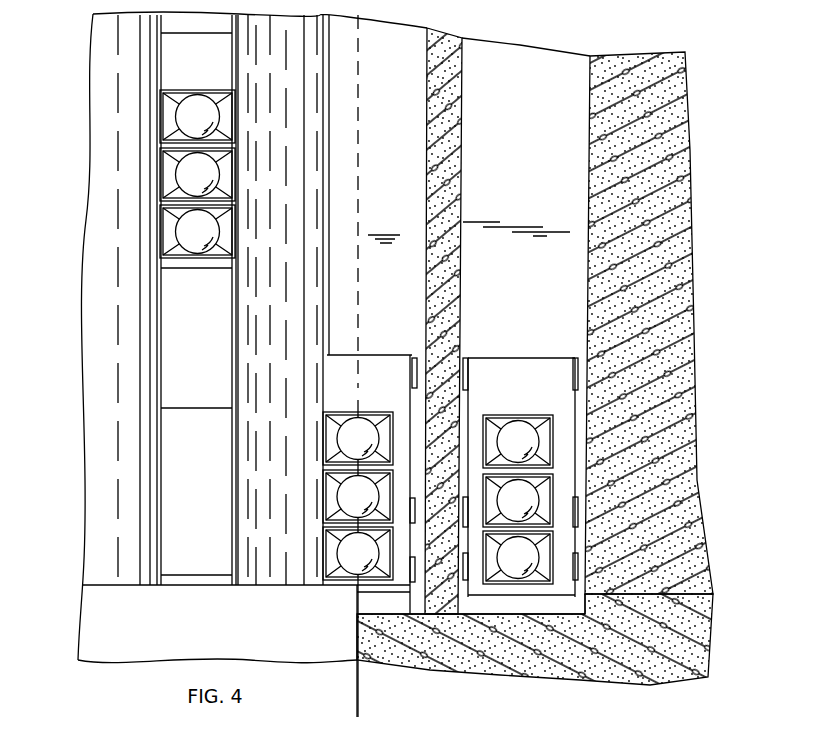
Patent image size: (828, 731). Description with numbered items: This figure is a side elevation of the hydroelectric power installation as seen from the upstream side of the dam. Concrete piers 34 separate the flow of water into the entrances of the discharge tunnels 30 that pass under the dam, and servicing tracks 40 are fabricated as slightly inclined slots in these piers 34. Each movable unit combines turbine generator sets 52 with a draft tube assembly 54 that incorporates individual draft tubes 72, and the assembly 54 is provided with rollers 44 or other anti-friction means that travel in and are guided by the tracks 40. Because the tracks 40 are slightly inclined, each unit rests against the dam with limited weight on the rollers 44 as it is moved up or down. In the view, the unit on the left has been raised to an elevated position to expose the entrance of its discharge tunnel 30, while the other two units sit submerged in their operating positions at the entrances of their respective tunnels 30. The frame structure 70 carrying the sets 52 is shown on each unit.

The discharge tunnel 30 is at (199, 462).
The concrete pier 34 is at (123, 271).
The servicing track 40 is at (403, 130).
The rollers 44 is at (416, 368).
The turbine generator set 52 is at (185, 178).
The draft tube assembly 54 is at (187, 264).
The float cell assembly 70 is at (240, 90).
The draft tube 72 is at (228, 166).